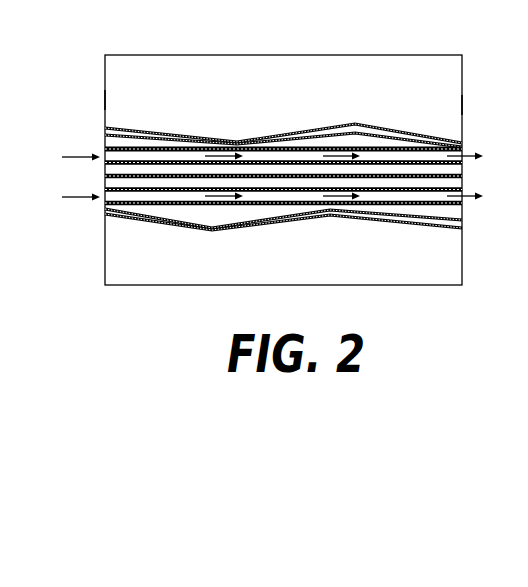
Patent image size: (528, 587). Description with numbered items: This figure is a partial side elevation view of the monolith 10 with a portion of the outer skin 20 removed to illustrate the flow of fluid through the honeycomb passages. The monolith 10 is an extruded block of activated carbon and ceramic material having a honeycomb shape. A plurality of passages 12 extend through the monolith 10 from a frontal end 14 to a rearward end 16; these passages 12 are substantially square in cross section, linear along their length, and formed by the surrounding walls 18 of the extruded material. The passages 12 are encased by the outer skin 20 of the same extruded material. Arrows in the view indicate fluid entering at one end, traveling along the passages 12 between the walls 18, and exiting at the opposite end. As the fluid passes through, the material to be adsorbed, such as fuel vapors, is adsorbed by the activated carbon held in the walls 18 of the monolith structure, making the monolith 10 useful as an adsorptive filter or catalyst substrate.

The monolith 10 is at (323, 44).
The passages 12 is at (128, 173).
The frontal end 14 is at (462, 106).
The rearward end 16 is at (105, 99).
The walls 18 is at (194, 162).
The outer skin 20 is at (303, 101).